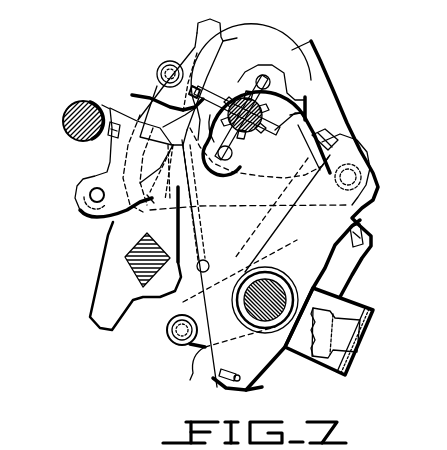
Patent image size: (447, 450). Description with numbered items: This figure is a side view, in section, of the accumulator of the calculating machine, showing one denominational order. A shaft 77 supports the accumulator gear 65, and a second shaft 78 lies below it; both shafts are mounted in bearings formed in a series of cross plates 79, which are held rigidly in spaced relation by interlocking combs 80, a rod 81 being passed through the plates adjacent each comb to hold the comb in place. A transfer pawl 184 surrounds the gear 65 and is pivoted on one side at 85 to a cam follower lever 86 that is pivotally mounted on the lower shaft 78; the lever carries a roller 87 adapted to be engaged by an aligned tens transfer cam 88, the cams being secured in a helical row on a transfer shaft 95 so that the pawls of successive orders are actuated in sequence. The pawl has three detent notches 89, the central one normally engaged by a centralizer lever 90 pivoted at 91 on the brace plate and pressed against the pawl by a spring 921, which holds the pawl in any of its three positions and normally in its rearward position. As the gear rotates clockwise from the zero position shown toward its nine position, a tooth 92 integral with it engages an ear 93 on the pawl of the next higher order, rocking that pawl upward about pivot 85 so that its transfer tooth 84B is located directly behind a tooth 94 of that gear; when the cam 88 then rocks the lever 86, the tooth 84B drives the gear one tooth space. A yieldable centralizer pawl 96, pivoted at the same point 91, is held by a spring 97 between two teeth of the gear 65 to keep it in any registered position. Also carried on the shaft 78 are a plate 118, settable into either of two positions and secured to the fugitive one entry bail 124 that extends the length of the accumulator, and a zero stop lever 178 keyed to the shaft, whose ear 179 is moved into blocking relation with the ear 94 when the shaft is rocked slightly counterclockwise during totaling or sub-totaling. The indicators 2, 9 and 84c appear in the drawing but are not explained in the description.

The machine 2 is at (331, 80).
The direction of view 9 is at (446, 207).
The accumulator gear 65 is at (240, 88).
The shaft 77 is at (260, 121).
The second shaft 78 is at (264, 329).
The cross plate 79 is at (388, 247).
The interlocking comb 80 is at (245, 388).
The rod 81 is at (374, 222).
The transfer tooth 84B is at (285, 117).
The shaft portion c 84c is at (245, 230).
The pivot 85 is at (366, 169).
The cam follower lever 86 is at (220, 358).
The roller 87 is at (170, 336).
The tens transfer cam 88 is at (123, 237).
The detent notch 89 is at (175, 44).
The centralizer lever 90 is at (153, 69).
The pivot 91 is at (90, 156).
The tooth 92 is at (156, 133).
The spring 921 is at (106, 228).
The ear 93 is at (237, 29).
The tooth 94 is at (284, 160).
The transfer shaft 95 is at (127, 257).
The centralizer pawl 96 is at (187, 65).
The spring 97 is at (248, 263).
The plate 118 is at (361, 333).
The fugitive one entry bail 124 is at (345, 332).
The zero stop lever 178 is at (321, 272).
The ear 179 is at (333, 137).
The transfer pawl 184 is at (343, 114).